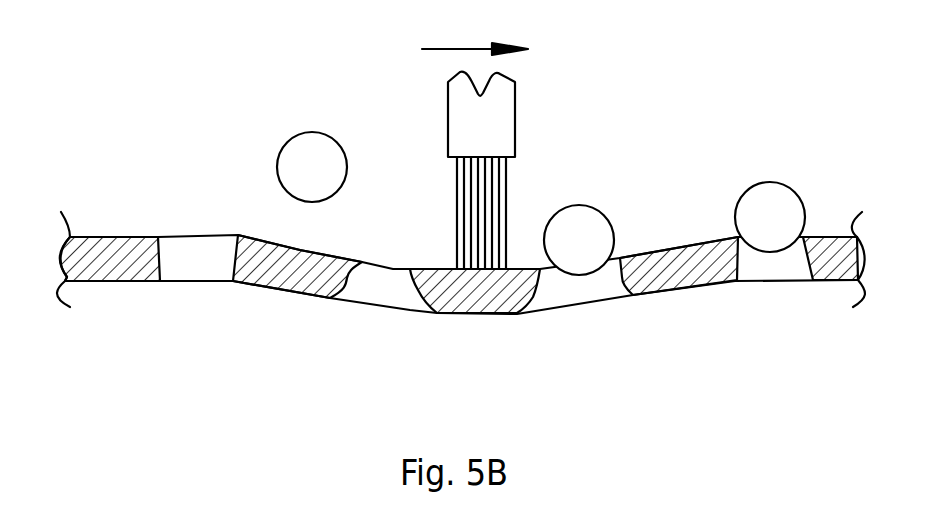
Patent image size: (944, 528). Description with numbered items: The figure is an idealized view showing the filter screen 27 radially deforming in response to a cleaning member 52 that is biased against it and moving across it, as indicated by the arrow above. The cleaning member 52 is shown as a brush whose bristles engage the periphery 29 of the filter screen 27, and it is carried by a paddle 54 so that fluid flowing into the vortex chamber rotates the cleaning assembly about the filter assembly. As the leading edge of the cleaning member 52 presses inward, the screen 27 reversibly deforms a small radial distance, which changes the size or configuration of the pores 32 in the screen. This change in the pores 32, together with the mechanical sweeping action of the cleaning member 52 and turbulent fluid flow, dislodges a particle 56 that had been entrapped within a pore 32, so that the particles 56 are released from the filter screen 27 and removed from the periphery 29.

The filter screen 27 is at (143, 236).
The periphery 29 is at (443, 268).
The pore 32 is at (776, 283).
The cleaning member 52 is at (505, 213).
The paddle 54 is at (515, 118).
The particle 56 is at (298, 133).